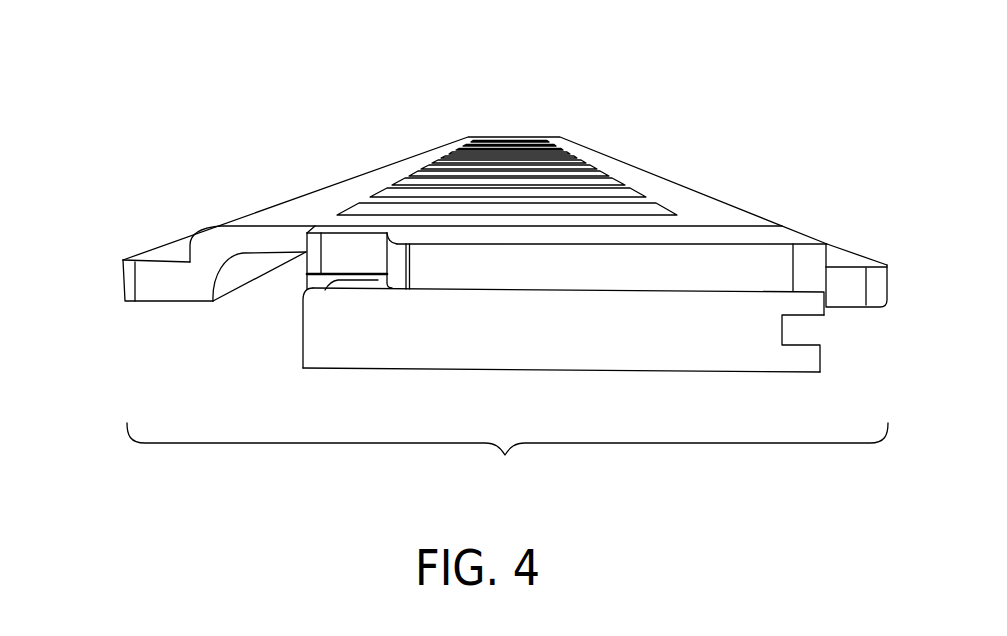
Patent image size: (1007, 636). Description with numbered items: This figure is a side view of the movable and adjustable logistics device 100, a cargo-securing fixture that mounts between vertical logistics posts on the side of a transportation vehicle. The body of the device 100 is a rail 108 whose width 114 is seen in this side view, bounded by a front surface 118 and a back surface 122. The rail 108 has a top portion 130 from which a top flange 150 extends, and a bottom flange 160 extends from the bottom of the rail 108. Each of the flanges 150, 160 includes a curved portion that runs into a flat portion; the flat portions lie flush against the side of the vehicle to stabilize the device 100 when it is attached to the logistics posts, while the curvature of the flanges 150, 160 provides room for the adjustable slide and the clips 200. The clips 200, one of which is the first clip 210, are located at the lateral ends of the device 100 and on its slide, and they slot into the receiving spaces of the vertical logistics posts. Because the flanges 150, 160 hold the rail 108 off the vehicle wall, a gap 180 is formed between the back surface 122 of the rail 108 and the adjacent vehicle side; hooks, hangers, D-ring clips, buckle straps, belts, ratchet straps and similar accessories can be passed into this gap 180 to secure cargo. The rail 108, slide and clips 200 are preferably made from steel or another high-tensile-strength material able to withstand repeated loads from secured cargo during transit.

The movable and adjustable logistics device 100 is at (663, 140).
The rail 108 is at (713, 158).
The width 114 is at (507, 466).
The front surface 118 is at (237, 177).
The back surface 122 is at (267, 252).
The top portion 130 is at (163, 223).
The top flange 150 is at (120, 283).
The bottom flange 160 is at (845, 238).
The gap 180 is at (213, 330).
The clips 200 is at (830, 358).
The first clip 210 is at (541, 345).